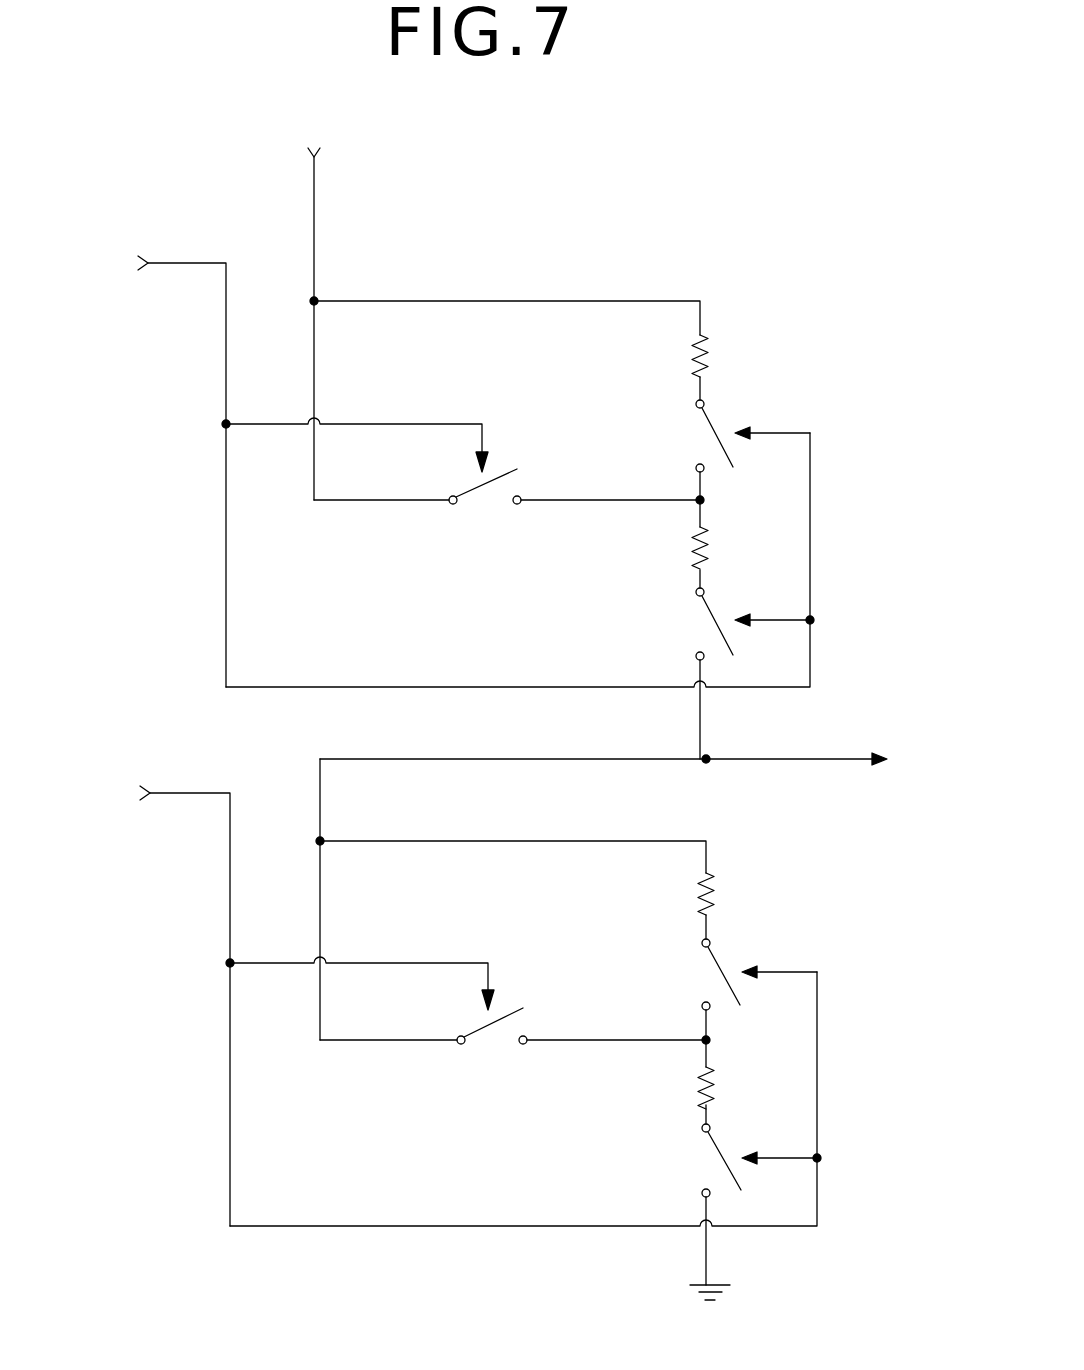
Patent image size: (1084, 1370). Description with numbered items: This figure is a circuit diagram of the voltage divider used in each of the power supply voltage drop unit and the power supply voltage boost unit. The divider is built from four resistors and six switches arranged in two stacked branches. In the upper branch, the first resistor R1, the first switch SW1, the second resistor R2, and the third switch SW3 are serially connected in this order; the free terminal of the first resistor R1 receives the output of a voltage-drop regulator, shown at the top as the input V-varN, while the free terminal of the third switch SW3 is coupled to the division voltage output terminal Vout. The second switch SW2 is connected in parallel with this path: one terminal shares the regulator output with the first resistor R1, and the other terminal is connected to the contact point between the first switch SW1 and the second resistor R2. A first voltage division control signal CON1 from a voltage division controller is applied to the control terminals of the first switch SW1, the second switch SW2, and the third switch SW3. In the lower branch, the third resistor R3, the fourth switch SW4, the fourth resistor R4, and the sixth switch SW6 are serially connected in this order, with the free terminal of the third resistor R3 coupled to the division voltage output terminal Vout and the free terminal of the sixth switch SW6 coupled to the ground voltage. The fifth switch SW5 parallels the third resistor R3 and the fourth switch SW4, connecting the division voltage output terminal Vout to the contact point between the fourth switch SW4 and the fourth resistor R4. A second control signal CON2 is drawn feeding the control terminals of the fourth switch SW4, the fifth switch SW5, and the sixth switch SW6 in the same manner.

The first resistor R1 is at (720, 356).
The second resistor R2 is at (720, 548).
The third resistor R3 is at (726, 894).
The fourth resistor R4 is at (726, 1088).
The first switch SW1 is at (728, 436).
The second switch SW2 is at (507, 503).
The third switch SW3 is at (730, 624).
The fourth switch SW4 is at (735, 974).
The fifth switch SW5 is at (513, 1042).
The sixth switch SW6 is at (739, 1160).
The first voltage division control signal CON1 is at (140, 468).
The second control signal CON2 is at (145, 1003).
The division voltage output terminal Vout is at (636, 759).
The variable voltage input V-varN is at (314, 309).